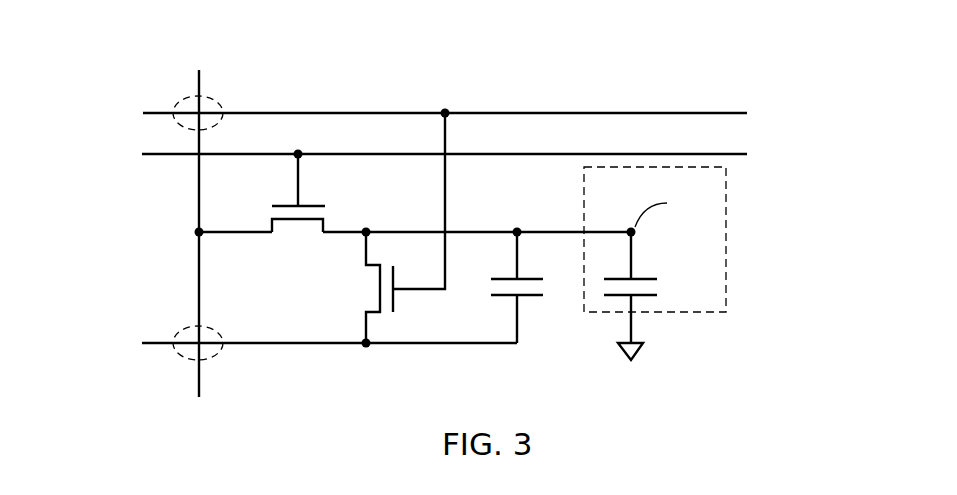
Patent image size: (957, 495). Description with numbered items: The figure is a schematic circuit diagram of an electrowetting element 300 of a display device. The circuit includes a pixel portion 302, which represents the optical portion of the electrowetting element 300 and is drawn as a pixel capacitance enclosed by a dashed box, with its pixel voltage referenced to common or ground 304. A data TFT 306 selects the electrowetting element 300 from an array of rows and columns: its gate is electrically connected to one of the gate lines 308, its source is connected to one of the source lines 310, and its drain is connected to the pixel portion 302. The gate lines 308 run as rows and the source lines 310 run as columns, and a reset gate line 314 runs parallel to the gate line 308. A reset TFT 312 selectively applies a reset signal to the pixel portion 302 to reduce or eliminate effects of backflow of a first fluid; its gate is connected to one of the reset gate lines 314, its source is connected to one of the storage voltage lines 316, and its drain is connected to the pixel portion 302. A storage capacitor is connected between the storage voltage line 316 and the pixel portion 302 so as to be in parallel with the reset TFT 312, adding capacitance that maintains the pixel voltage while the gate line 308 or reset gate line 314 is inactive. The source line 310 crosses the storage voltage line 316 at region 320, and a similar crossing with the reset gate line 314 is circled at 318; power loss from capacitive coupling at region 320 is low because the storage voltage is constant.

The electrowetting element 300 is at (753, 63).
The pixel portion 302 is at (727, 248).
The ground 304 is at (627, 356).
The data TFT 306 is at (300, 236).
The gate lines 308 is at (138, 154).
The source lines 310 is at (280, 23).
The reset TFT 312 is at (363, 288).
The reset gate lines 314 is at (145, 108).
The storage voltage lines 316 is at (133, 343).
The crossover of source line and reset gate line 318 is at (214, 99).
The regions 320 is at (185, 327).